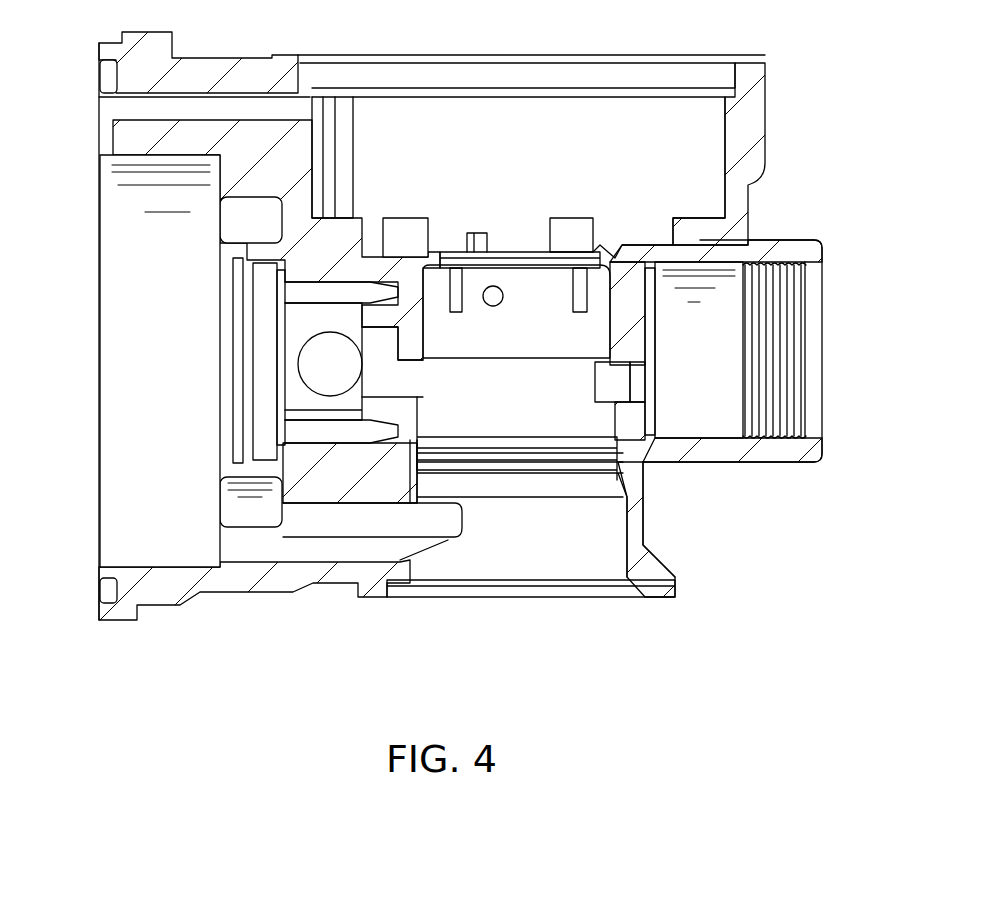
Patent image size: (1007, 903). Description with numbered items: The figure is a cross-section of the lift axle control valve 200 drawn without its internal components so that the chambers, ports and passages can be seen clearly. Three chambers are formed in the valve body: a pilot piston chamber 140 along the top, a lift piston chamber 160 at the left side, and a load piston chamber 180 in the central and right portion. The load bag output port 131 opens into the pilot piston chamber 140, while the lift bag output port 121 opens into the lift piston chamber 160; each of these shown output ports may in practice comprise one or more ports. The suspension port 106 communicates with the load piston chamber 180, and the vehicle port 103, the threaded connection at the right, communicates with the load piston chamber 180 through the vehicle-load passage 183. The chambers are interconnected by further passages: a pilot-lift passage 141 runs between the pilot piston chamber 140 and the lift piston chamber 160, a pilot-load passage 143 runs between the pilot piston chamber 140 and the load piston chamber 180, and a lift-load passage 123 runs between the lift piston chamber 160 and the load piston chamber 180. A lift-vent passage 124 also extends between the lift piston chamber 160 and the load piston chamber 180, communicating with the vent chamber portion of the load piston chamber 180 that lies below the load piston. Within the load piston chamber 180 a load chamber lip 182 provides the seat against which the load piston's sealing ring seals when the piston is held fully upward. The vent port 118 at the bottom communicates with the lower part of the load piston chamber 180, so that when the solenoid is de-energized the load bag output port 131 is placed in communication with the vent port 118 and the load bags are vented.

The vehicle port 103 is at (813, 382).
The suspension port 106 is at (503, 300).
The vent port 118 is at (525, 598).
The lift bag output port 121 is at (297, 368).
The lift-load passage 123 is at (418, 383).
The lift-vent passage 124 is at (448, 540).
The load bag output port 131 is at (566, 218).
The pilot piston chamber 140 is at (512, 110).
The pilot-lift passage 141 is at (117, 105).
The pilot-load passage 143 is at (502, 262).
The lift piston chamber 160 is at (117, 515).
The load piston chamber 180 is at (608, 433).
The load chamber lip 182 is at (452, 255).
The vehicle-load passage 183 is at (618, 385).
The lift axle control valve 200 is at (168, 668).